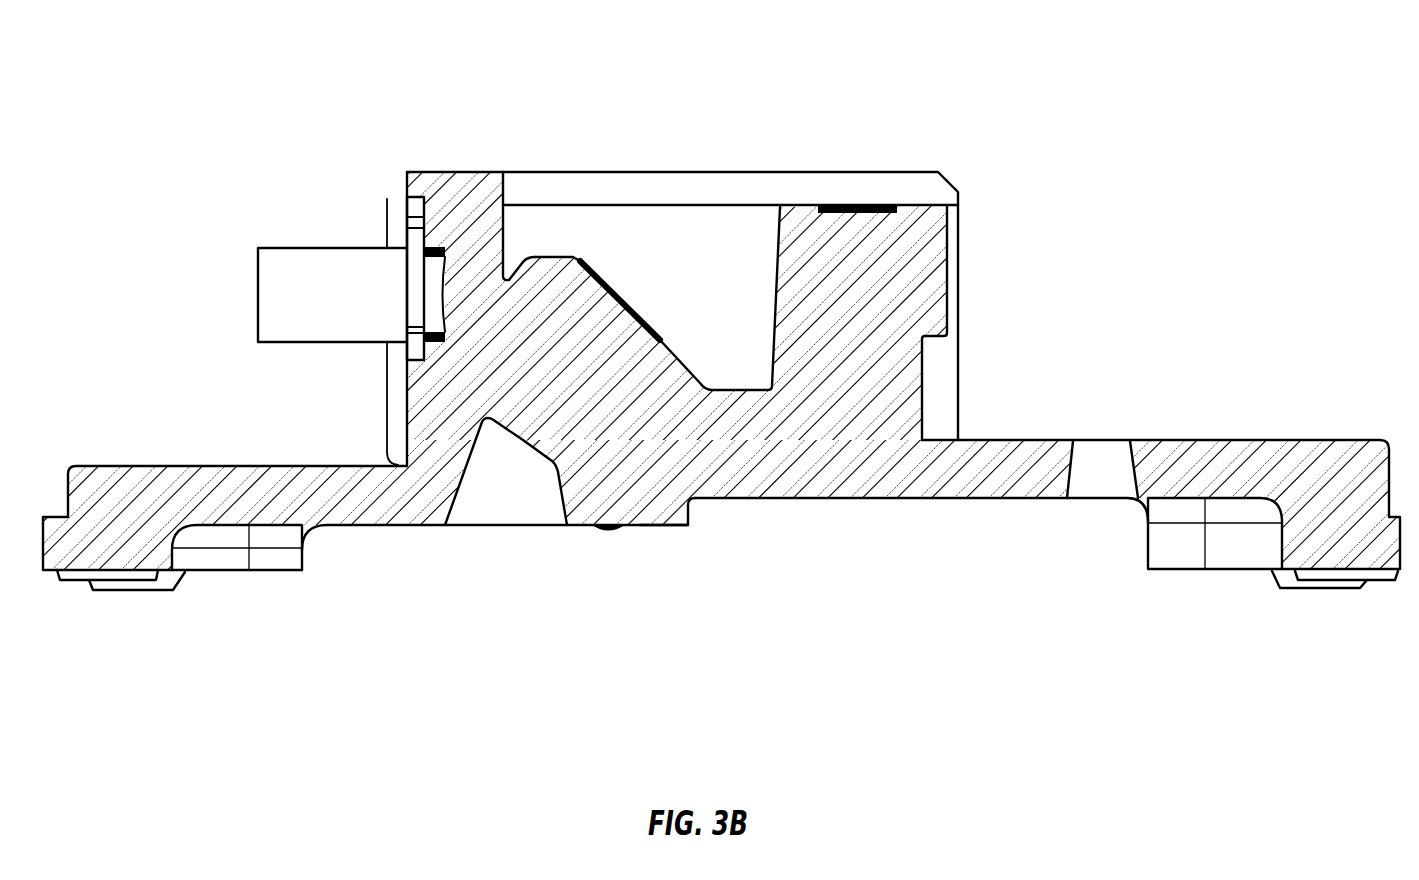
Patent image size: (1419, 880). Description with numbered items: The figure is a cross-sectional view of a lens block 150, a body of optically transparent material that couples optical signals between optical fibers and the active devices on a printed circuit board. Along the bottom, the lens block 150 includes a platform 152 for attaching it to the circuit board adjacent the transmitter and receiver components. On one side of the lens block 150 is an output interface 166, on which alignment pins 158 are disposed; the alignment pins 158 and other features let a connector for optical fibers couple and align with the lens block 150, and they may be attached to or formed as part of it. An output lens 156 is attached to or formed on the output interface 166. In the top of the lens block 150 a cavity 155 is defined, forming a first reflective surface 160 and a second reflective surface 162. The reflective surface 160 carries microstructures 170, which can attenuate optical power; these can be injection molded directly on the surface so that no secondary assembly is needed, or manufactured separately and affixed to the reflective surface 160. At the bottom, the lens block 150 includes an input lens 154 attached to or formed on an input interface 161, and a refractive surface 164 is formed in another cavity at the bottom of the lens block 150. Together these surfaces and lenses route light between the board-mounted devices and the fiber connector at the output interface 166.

The lens block 150 is at (389, 84).
The platform 152 is at (1185, 440).
The input lens 154 is at (613, 531).
The cavity 155 is at (780, 222).
The output lens 156 is at (440, 293).
The alignment pins 158 is at (256, 274).
The first reflective surface 160 is at (573, 260).
The input interface 161 is at (673, 527).
The second reflective surface 162 is at (519, 259).
The refractive surface 164 is at (524, 440).
The output interface 166 is at (407, 199).
The microstructures 170 is at (627, 300).